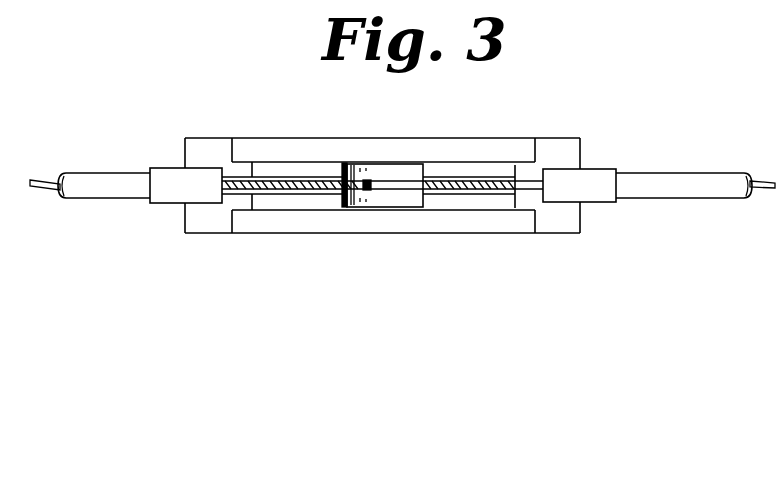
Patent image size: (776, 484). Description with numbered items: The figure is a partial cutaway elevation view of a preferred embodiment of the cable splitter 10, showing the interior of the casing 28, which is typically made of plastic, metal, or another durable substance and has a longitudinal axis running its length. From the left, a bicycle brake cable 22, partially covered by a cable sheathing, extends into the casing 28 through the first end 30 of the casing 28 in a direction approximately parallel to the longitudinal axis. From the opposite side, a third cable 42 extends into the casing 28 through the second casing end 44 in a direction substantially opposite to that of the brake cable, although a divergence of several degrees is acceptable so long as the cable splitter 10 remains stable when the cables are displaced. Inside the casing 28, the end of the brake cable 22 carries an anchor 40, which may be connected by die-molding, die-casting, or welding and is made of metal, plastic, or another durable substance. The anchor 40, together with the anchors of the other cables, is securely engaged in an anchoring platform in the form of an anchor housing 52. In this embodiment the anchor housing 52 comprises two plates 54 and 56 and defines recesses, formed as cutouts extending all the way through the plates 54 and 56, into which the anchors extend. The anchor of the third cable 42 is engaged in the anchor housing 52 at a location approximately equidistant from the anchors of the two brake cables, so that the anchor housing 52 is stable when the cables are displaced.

The cable splitter 10 is at (587, 118).
The bicycle brake cable 22 is at (285, 192).
The casing 28 is at (506, 147).
The first end of the casing 30 is at (193, 154).
The anchor 40 is at (387, 190).
The third cable 42 is at (492, 192).
The second casing end 44 is at (572, 155).
The anchor housing 52 is at (337, 168).
The plate 54 is at (397, 172).
The plate 56 is at (368, 200).